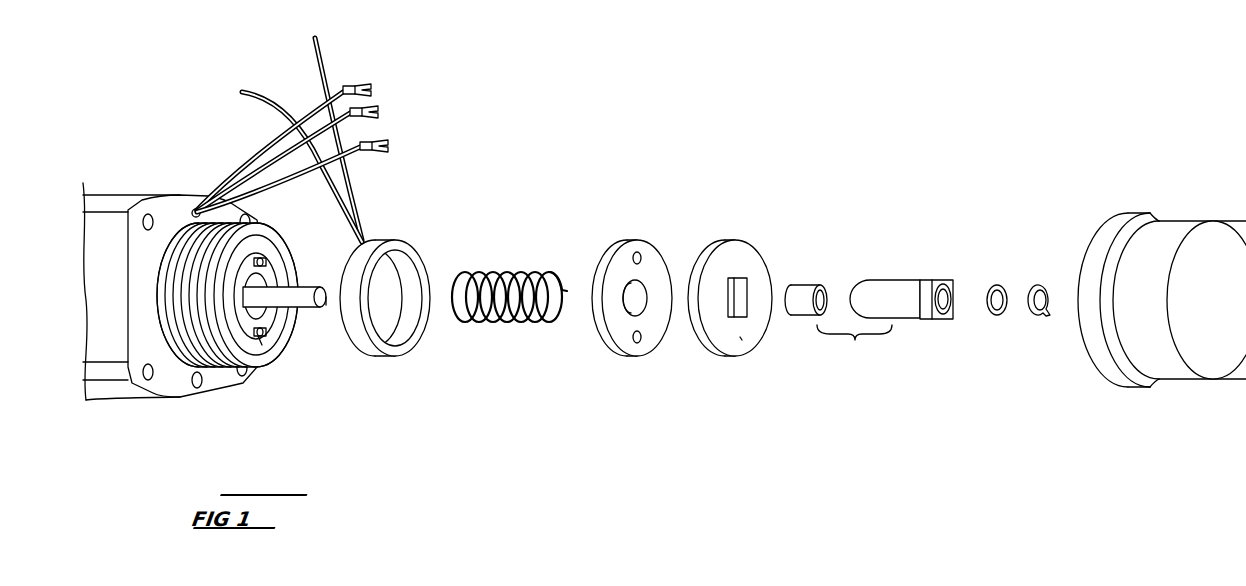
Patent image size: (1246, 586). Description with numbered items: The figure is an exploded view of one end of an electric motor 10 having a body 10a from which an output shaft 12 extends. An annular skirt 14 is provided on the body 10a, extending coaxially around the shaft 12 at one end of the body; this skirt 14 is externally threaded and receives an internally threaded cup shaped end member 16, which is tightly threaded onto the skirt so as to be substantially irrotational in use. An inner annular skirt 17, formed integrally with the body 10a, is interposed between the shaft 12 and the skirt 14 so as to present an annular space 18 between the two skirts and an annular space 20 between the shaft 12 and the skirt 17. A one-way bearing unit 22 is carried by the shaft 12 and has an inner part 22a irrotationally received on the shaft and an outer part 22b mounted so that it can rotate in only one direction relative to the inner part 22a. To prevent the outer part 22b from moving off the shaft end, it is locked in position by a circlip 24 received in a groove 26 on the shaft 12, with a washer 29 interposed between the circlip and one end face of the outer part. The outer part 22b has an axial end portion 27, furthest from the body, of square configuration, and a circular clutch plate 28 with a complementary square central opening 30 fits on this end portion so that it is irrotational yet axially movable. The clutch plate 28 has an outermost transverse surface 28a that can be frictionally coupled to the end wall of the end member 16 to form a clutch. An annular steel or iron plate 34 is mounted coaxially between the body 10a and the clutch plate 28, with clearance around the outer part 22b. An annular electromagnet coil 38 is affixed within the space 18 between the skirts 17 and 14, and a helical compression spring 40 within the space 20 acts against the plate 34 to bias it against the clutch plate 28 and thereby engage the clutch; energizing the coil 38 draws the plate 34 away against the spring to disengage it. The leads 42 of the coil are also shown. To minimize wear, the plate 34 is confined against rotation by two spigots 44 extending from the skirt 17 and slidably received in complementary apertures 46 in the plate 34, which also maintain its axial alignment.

The motor 10 is at (110, 390).
The body 10a is at (100, 200).
The output shaft 12 is at (277, 298).
The annular skirt 14 is at (217, 362).
The cup shaped end member 16 is at (1172, 367).
The inner annular skirt 17 is at (263, 277).
The annular space 18 is at (260, 345).
The annular space 20 is at (265, 282).
The one-way bearing unit 22 is at (854, 347).
The inner part 22a is at (797, 307).
The outer part 22b is at (880, 288).
The circlip 24 is at (1038, 288).
The groove 26 is at (317, 307).
The axial end portion 27 is at (928, 283).
The clutch plate 28 is at (740, 262).
The outermost transverse surface 28a is at (740, 337).
The washer 29 is at (1000, 312).
The central opening 30 is at (730, 307).
The annular steel or iron plate 34 is at (600, 351).
The annular electromagnet coil 38 is at (368, 347).
The helical compression spring 40 is at (483, 320).
The lead wires 42 is at (290, 140).
The spigots 44 is at (263, 258).
The apertures 46 is at (639, 254).